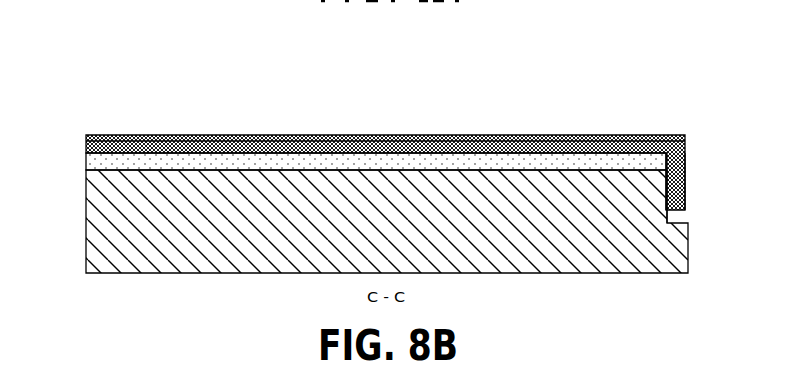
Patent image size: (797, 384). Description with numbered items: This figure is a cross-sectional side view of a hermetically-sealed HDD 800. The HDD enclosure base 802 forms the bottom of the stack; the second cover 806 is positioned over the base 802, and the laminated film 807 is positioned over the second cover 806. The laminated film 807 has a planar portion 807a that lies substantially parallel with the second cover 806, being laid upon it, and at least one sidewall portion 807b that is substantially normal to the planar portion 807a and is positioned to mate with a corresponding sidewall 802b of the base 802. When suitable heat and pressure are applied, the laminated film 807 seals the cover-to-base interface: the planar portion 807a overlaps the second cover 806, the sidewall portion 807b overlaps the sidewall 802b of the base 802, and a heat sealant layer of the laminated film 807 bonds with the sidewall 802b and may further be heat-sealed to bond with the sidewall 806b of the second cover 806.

The hermetically-sealed HDD 800 is at (115, 57).
The HDD enclosure base 802 is at (672, 248).
The sidewall of the base 802b is at (667, 199).
The second cover 806 is at (87, 159).
The sidewall of the second cover 806b is at (686, 163).
The laminated film 807 is at (651, 134).
The planar portion 807a is at (321, 136).
The sidewall portion 807b is at (688, 192).